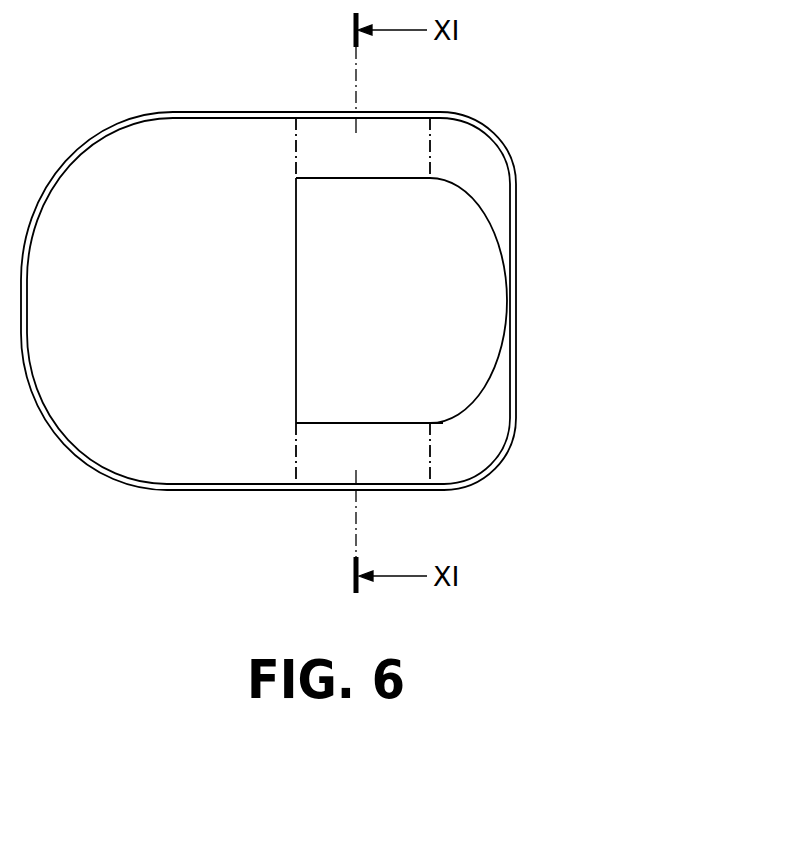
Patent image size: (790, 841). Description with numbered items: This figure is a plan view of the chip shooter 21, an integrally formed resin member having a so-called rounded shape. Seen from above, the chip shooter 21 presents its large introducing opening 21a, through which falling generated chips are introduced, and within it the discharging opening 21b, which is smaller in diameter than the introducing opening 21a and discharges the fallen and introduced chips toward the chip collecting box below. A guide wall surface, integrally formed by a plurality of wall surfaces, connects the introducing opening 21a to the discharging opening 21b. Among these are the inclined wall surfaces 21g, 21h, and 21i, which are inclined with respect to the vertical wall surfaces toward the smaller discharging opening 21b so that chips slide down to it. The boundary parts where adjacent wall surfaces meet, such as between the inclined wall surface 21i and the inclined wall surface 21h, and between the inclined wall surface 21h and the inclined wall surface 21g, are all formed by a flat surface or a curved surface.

The chip shooter 21 is at (343, 279).
The introducing opening 21a is at (202, 116).
The discharging opening 21b is at (395, 422).
The inclined wall surface 21g is at (122, 428).
The inclined wall surface 21h is at (402, 130).
The inclined wall surface 21i is at (484, 165).